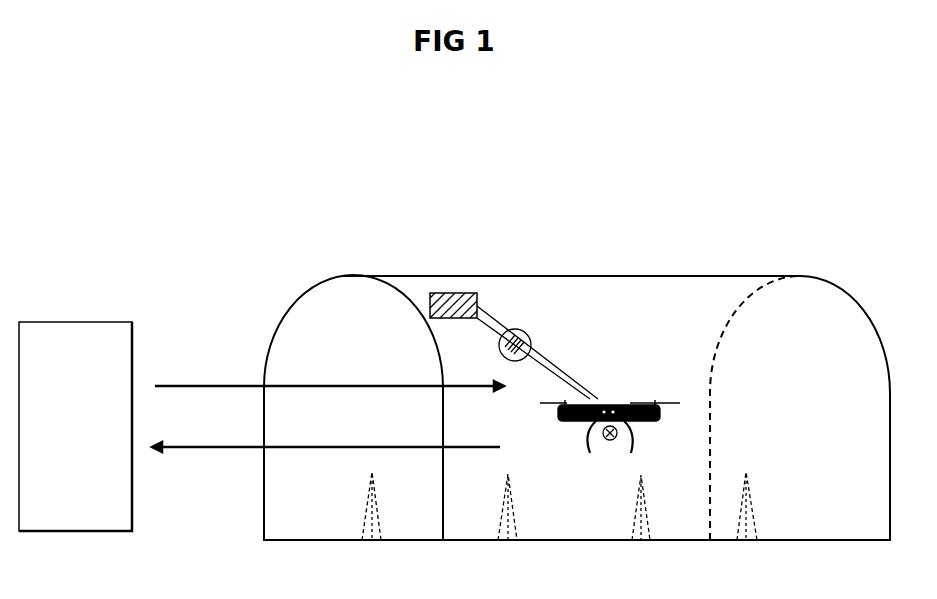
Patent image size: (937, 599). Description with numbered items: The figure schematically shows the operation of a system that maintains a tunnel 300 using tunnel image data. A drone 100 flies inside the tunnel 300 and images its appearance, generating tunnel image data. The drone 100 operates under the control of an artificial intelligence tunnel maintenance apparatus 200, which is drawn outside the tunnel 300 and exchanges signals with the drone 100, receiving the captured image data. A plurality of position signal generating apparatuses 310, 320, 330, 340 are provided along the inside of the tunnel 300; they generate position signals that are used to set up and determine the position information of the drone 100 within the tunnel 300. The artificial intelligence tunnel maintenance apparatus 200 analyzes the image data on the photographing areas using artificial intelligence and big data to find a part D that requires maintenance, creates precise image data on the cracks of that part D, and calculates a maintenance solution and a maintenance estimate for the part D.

The drone 100 is at (616, 403).
The artificial intelligence tunnel maintenance apparatus 200 is at (75, 426).
The tunnel 300 is at (567, 276).
The position signal generating apparatus 310 is at (373, 526).
The position signal generating apparatus 320 is at (509, 528).
The position signal generating apparatus 330 is at (646, 528).
The position signal generating apparatus 340 is at (749, 527).
The part requiring maintenance D is at (444, 293).